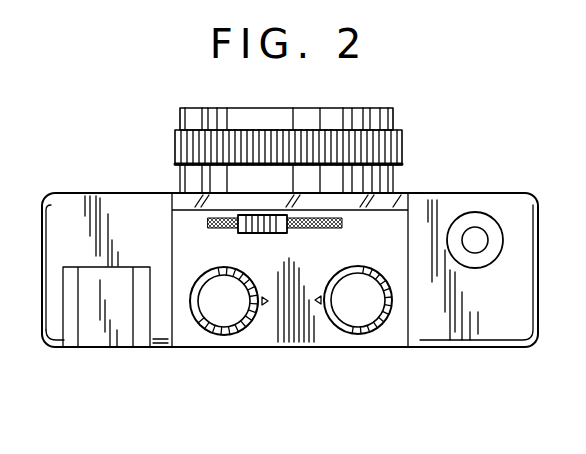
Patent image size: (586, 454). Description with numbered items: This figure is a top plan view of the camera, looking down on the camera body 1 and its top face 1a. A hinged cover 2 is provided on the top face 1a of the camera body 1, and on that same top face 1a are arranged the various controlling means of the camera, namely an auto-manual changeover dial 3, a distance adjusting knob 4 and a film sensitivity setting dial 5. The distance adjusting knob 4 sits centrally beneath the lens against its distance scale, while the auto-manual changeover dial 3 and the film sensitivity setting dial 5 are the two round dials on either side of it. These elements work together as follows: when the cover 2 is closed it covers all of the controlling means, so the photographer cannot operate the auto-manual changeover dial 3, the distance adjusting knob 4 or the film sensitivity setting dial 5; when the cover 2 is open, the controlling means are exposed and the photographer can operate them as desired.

The camera body 1 is at (463, 189).
The top face 1a is at (265, 337).
The hinged cover 2 is at (392, 203).
The auto-manual changeover dial 3 is at (362, 318).
The distance adjusting knob 4 is at (258, 218).
The film sensitivity setting dial 5 is at (218, 320).